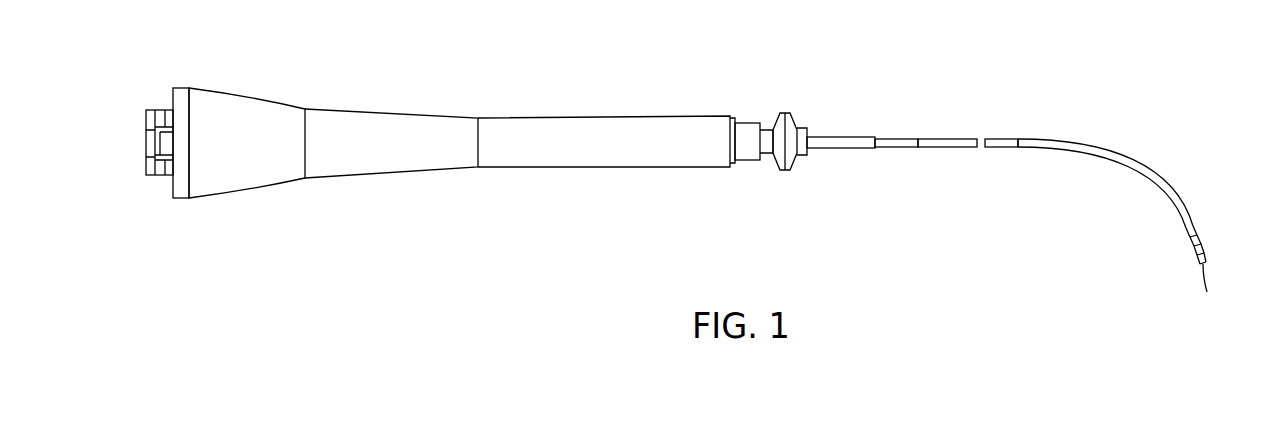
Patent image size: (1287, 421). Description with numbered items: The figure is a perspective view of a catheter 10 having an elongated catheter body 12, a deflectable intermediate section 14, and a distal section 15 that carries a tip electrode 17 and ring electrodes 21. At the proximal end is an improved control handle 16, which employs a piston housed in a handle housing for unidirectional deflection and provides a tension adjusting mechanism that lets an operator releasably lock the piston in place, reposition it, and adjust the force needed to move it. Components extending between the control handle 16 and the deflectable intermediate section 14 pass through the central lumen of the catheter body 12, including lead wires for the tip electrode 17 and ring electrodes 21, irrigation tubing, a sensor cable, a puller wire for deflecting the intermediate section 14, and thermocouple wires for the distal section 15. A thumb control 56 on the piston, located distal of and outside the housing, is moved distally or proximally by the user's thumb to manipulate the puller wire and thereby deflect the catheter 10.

The catheter 10 is at (806, 81).
The elongated catheter body 12 is at (995, 138).
The deflectable intermediate section 14 is at (1132, 158).
The distal section 15 is at (1194, 243).
The control handle 16 is at (402, 113).
The tip electrode 17 is at (1202, 295).
The ring electrodes 21 is at (1200, 233).
The thumb control 56 is at (785, 171).